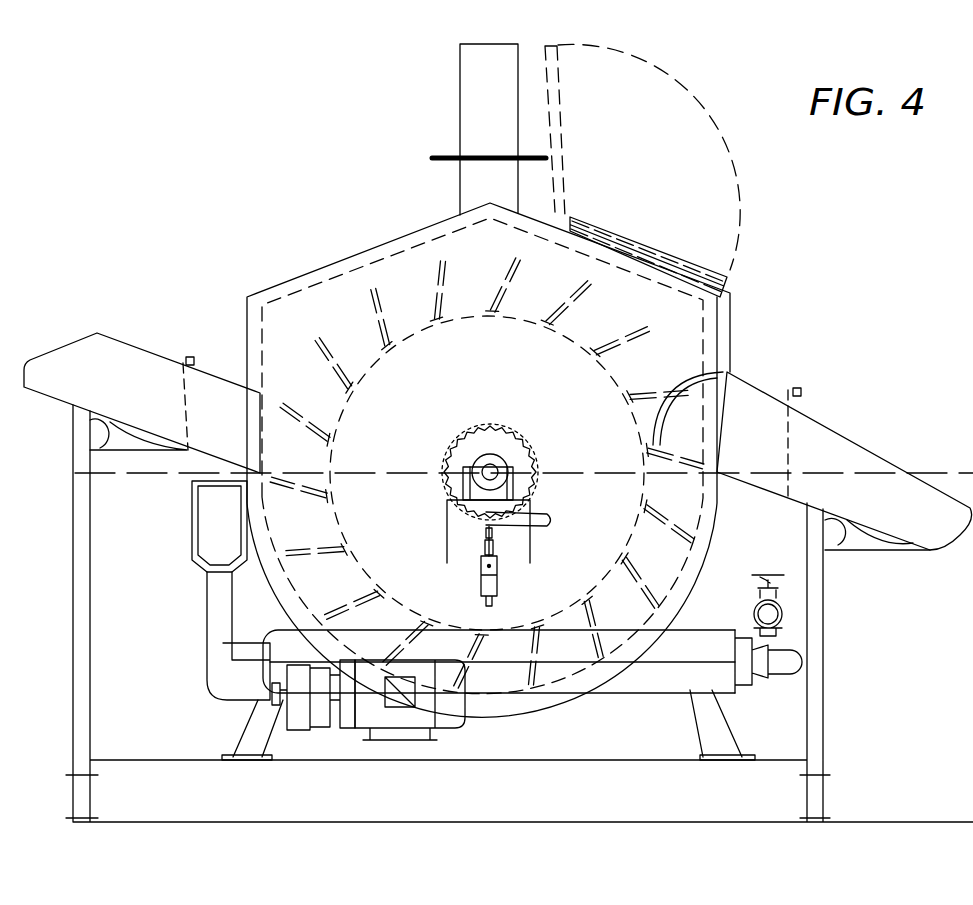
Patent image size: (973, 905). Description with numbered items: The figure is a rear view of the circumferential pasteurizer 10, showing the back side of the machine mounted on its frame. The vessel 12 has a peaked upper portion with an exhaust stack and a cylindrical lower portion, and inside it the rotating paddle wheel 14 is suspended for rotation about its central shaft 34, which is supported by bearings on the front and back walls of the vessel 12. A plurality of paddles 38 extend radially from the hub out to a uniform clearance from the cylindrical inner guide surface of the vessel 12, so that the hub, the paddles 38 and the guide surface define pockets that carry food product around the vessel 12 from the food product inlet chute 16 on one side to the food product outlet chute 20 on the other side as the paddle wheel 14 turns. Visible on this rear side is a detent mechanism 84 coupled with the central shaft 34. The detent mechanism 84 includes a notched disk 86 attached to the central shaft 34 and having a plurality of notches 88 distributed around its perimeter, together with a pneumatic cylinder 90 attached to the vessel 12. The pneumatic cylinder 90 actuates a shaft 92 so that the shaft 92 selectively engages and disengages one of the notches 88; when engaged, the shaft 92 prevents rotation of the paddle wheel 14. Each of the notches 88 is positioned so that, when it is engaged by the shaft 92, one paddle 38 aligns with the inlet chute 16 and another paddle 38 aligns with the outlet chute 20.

The circumferential pasteurizer 10 is at (233, 148).
The vessel 12 is at (375, 245).
The rotating paddle wheel 14 is at (392, 452).
The food product inlet chute 16 is at (168, 353).
The food product outlet chute 20 is at (863, 437).
The central shaft 34 is at (465, 486).
The paddles 38 is at (300, 485).
The detent mechanism 84 is at (544, 428).
The notched disk 86 is at (468, 445).
The notches 88 is at (490, 426).
The pneumatic cylinder 90 is at (497, 578).
The shaft 92 is at (487, 538).